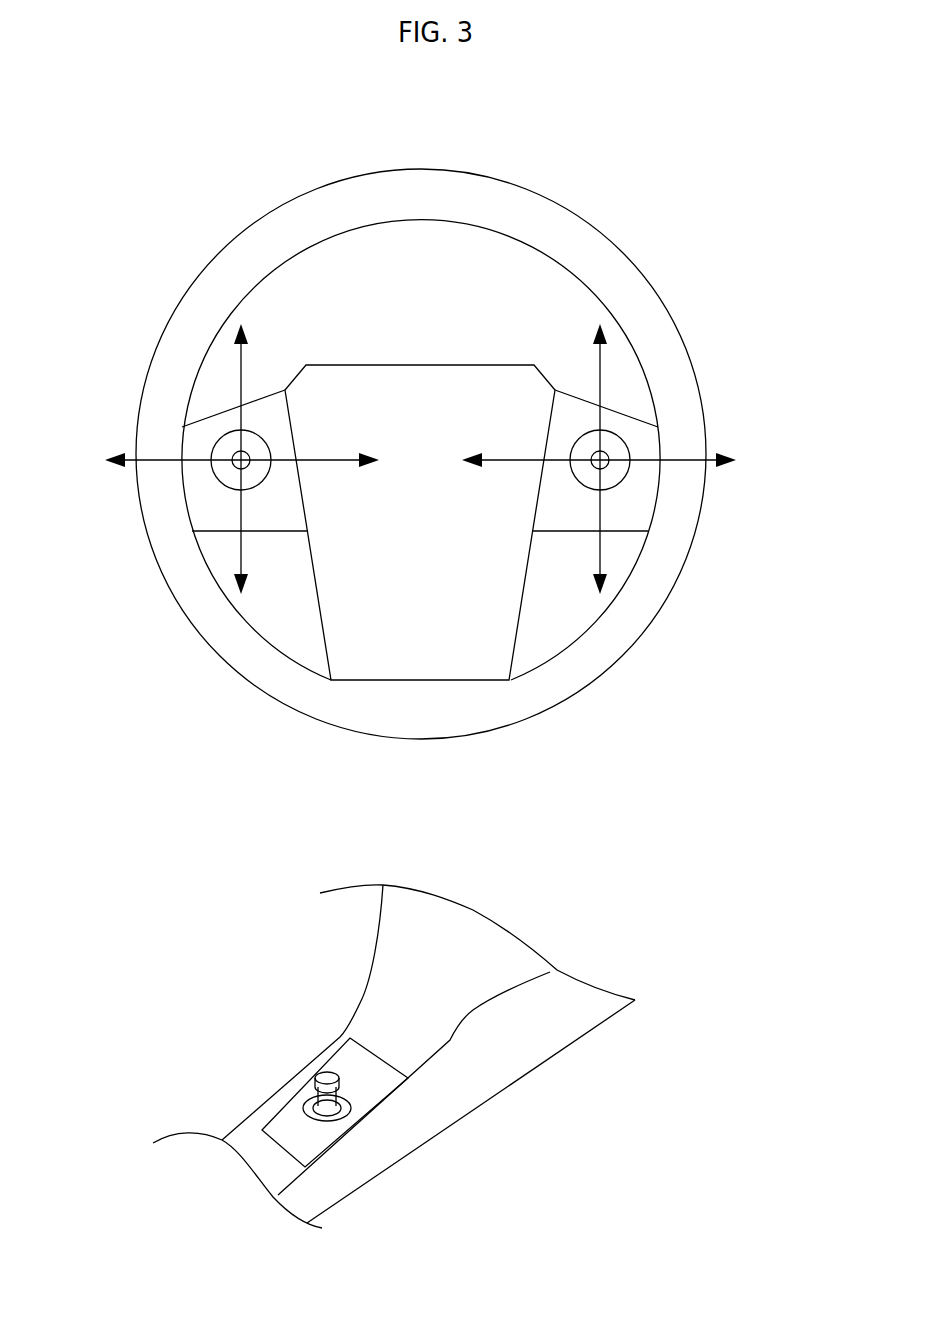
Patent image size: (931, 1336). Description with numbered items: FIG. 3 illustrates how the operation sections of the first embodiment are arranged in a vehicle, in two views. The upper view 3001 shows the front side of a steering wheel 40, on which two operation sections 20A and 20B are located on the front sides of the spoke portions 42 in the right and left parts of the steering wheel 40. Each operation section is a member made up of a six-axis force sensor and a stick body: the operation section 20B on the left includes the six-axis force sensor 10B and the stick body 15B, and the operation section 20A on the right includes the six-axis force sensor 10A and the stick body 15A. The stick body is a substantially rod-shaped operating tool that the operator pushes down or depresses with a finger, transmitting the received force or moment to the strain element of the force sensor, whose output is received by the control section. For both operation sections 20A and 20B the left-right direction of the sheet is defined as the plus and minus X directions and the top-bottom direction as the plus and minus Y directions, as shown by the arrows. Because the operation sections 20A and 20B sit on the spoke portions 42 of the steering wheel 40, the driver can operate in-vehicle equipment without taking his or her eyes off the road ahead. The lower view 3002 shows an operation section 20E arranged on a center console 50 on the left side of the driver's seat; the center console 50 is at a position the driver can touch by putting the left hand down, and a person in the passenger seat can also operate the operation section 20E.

The arrangement view of steering wheel operation sections 3001 is at (236, 177).
The steering wheel 40 is at (591, 227).
The spoke portions 42 is at (270, 392).
The operation section 20B is at (72, 225).
The stick body 15B is at (234, 455).
The six-axis force sensor 10B is at (225, 472).
The operation section 20A is at (824, 220).
The stick body 15A is at (607, 455).
The six-axis force sensor 10A is at (612, 474).
The arrangement view of center console operation section 3002 is at (221, 927).
The center console 50 is at (414, 1035).
The operation section 20E is at (298, 1046).